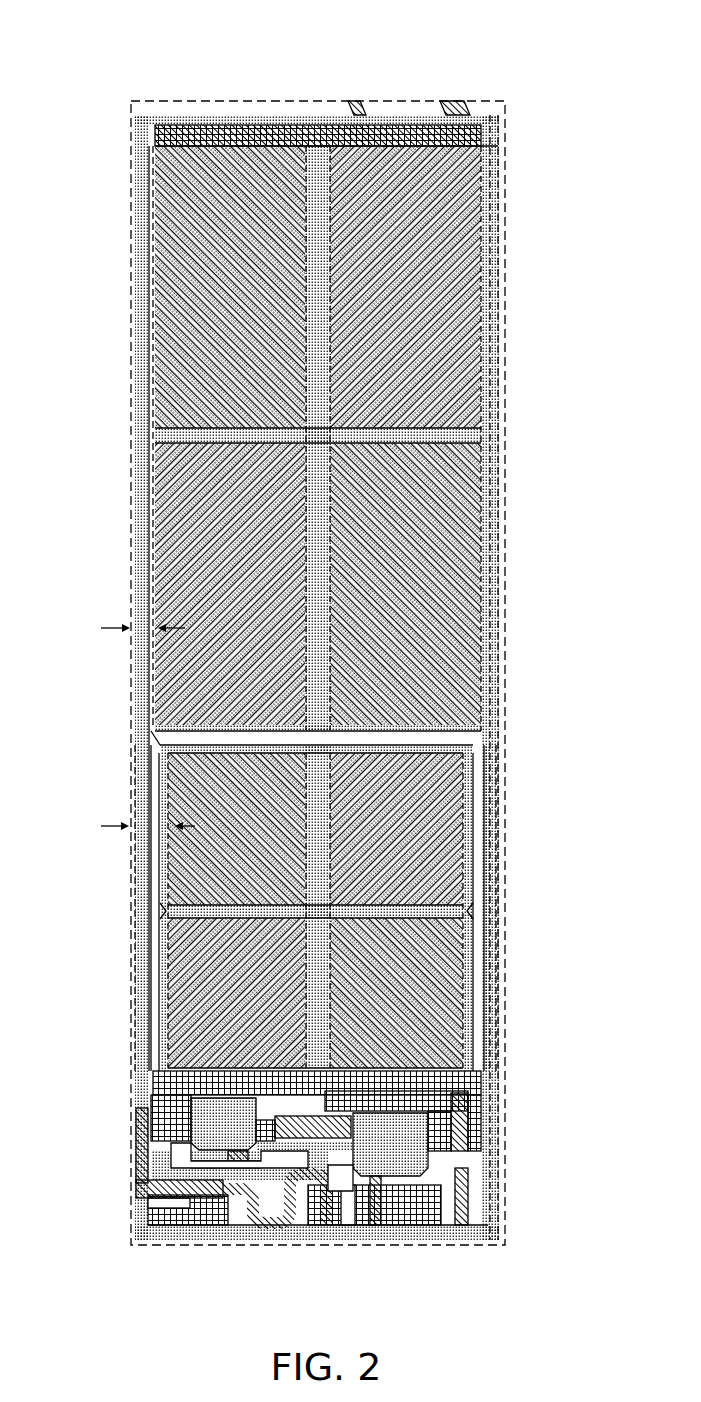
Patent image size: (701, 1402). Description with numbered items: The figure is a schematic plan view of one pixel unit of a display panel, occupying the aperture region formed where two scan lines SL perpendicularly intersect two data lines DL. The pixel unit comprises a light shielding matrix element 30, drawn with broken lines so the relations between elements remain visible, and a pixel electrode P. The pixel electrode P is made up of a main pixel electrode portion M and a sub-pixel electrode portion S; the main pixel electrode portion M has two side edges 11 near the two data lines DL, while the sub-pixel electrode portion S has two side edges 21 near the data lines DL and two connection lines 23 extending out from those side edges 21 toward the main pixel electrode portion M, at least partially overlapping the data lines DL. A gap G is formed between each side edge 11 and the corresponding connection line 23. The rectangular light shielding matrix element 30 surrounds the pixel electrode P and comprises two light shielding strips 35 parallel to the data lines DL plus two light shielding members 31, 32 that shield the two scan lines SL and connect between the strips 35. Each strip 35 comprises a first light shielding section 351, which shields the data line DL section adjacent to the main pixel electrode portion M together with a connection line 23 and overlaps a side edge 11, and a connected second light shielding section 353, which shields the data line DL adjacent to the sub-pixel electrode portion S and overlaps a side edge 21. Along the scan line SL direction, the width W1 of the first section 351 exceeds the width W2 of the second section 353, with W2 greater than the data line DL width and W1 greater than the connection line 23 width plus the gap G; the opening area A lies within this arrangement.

The light shielding matrix element 30 is at (499, 91).
The light shielding member 31 is at (313, 93).
The light shielding member 32 is at (290, 1238).
The light shielding strip 35 is at (123, 383).
The first light shielding section 351 is at (123, 772).
The second light shielding section 353 is at (123, 542).
The side edge 21 is at (320, 394).
The connection line 23 is at (133, 955).
The side edge 11 is at (160, 875).
The opening area A is at (250, 180).
The sub-pixel electrode portion S is at (485, 213).
The main pixel electrode portion M is at (460, 770).
The gap G is at (147, 797).
The pixel electrode P is at (147, 1005).
The width of the first light shielding section W1 is at (137, 840).
The width of the second light shielding section W2 is at (136, 615).
The data line DL is at (148, 1143).
The scan line SL is at (146, 112).